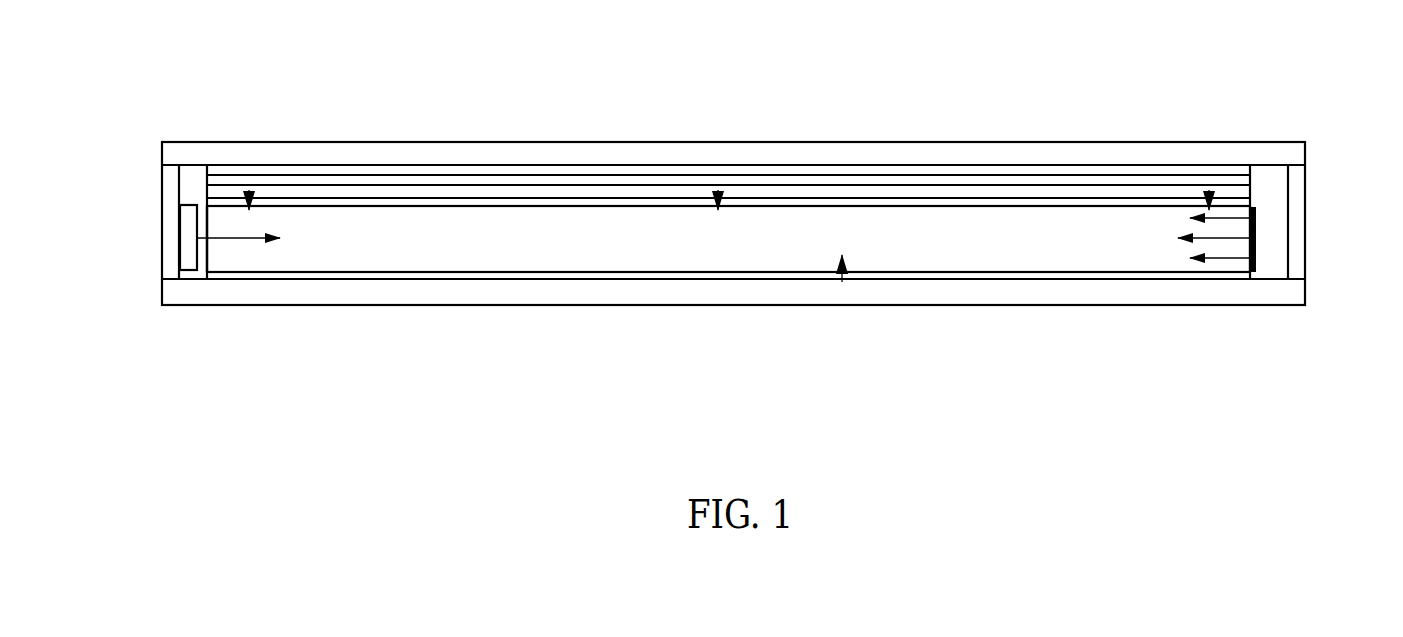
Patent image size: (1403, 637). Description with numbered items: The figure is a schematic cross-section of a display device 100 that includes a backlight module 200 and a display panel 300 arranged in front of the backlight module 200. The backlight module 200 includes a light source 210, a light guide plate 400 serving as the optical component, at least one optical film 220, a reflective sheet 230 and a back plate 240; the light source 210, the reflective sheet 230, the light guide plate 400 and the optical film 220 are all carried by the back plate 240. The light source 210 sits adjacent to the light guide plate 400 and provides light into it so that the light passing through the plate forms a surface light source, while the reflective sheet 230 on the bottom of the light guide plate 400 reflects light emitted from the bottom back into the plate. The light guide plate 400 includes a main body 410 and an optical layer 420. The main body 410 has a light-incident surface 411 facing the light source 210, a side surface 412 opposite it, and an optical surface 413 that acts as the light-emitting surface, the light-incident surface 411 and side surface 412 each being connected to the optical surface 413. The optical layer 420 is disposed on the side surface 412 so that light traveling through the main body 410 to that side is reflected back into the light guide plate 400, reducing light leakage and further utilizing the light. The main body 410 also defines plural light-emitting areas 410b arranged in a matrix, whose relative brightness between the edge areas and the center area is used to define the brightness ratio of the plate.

The display device 100 is at (174, 36).
The backlight module 200 is at (148, 204).
The light source 210 is at (187, 252).
The optical film 220 is at (577, 200).
The reflective sheet 230 is at (585, 275).
The back plate 240 is at (432, 300).
The display panel 300 is at (377, 155).
The light guide plate 400 is at (842, 280).
The main body 410 is at (781, 253).
The light-emitting areas 410b is at (249, 192).
The light-incident surface 411 is at (202, 270).
The side surface 412 is at (1248, 263).
The optical surface 413 is at (1032, 200).
The optical layer 420 is at (1256, 245).